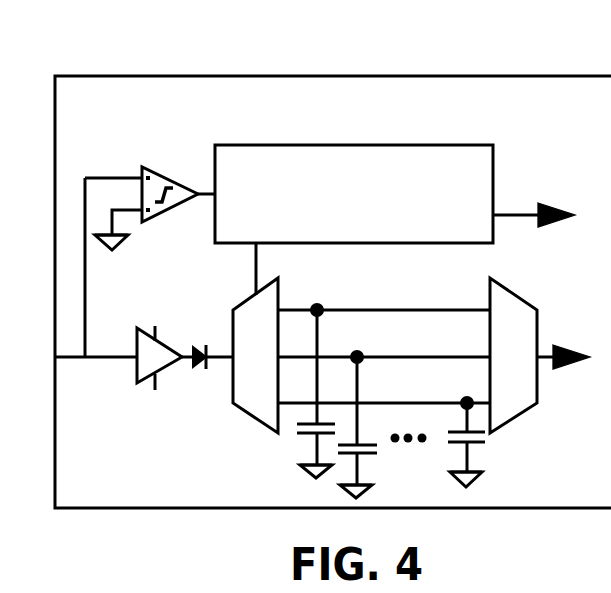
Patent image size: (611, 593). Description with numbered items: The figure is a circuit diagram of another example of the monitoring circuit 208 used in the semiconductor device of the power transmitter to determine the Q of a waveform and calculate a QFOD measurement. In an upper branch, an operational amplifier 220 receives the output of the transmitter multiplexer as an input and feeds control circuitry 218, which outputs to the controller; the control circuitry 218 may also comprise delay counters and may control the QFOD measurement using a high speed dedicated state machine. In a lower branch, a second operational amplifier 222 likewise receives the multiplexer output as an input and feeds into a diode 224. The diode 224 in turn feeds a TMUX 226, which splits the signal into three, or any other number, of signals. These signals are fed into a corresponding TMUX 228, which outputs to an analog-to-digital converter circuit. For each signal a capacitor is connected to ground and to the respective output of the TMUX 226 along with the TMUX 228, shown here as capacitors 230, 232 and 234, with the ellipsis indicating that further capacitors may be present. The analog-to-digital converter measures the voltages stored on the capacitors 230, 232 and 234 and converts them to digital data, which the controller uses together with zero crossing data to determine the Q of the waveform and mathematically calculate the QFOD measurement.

The monitoring circuit 208 is at (242, 74).
The control circuitry 218 is at (344, 145).
The operational amplifier 220 is at (160, 176).
The operational amplifier 222 is at (162, 343).
The diode 224 is at (198, 364).
The TMUX 226 is at (252, 421).
The TMUX 228 is at (512, 418).
The capacitor 230 is at (307, 440).
The capacitor 232 is at (368, 443).
The capacitor 234 is at (457, 444).